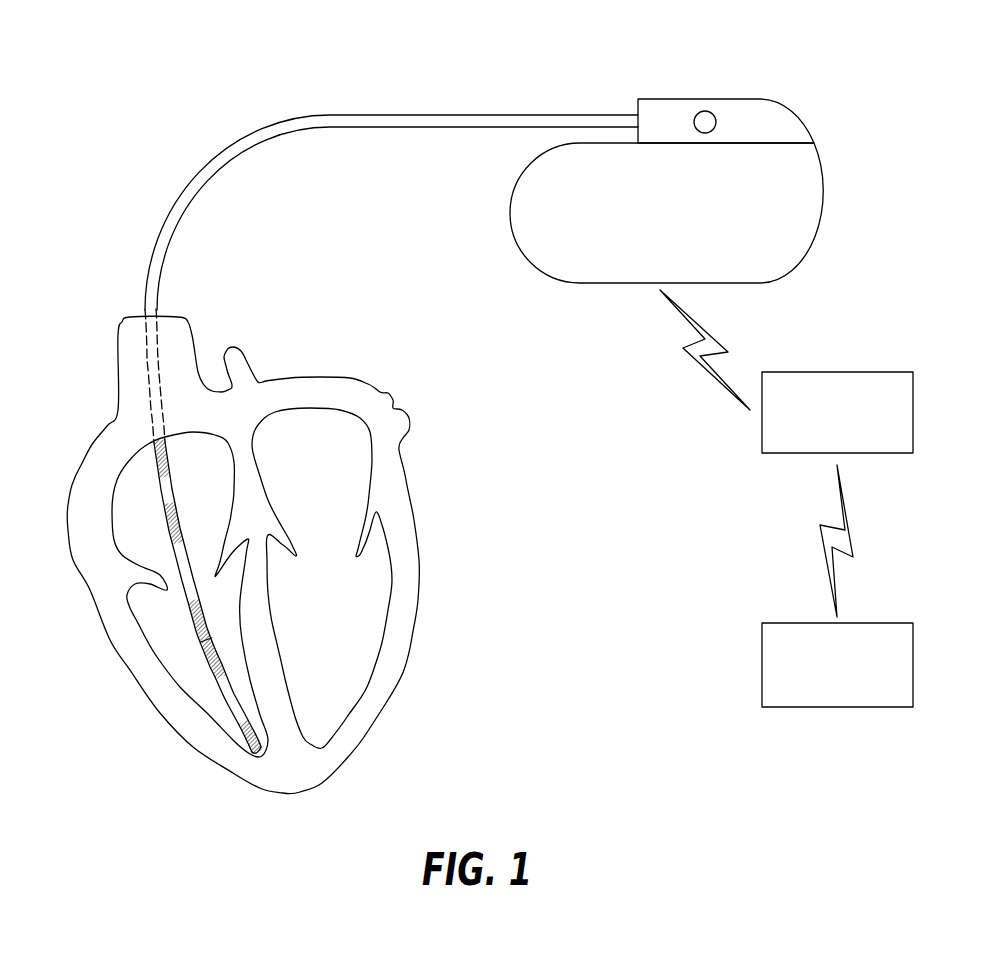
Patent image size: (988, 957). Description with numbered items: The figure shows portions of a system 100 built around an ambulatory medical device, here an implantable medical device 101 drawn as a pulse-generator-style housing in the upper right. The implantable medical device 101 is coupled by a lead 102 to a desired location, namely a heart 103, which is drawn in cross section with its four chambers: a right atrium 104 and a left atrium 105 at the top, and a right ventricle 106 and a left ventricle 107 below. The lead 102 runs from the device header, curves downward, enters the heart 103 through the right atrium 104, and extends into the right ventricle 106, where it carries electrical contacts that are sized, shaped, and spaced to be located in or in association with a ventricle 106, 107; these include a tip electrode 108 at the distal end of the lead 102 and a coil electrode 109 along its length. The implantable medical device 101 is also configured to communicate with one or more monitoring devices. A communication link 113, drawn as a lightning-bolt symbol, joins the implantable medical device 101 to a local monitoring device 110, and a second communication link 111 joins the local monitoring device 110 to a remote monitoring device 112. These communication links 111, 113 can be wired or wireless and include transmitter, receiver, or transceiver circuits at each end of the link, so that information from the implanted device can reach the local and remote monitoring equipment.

The system 100 is at (164, 52).
The implantable medical device 101 is at (799, 88).
The lead 102 is at (203, 168).
The heart 103 is at (350, 343).
The right atrium 104 is at (130, 517).
The left atrium 105 is at (347, 470).
The right ventricle 106 is at (197, 683).
The left ventricle 107 is at (363, 652).
The tip electrode 108 is at (243, 757).
The coil electrode 109 is at (200, 640).
The local monitoring device 110 is at (835, 372).
The communication link 111 is at (848, 508).
The remote monitoring device 112 is at (862, 622).
The communication link 113 is at (715, 387).